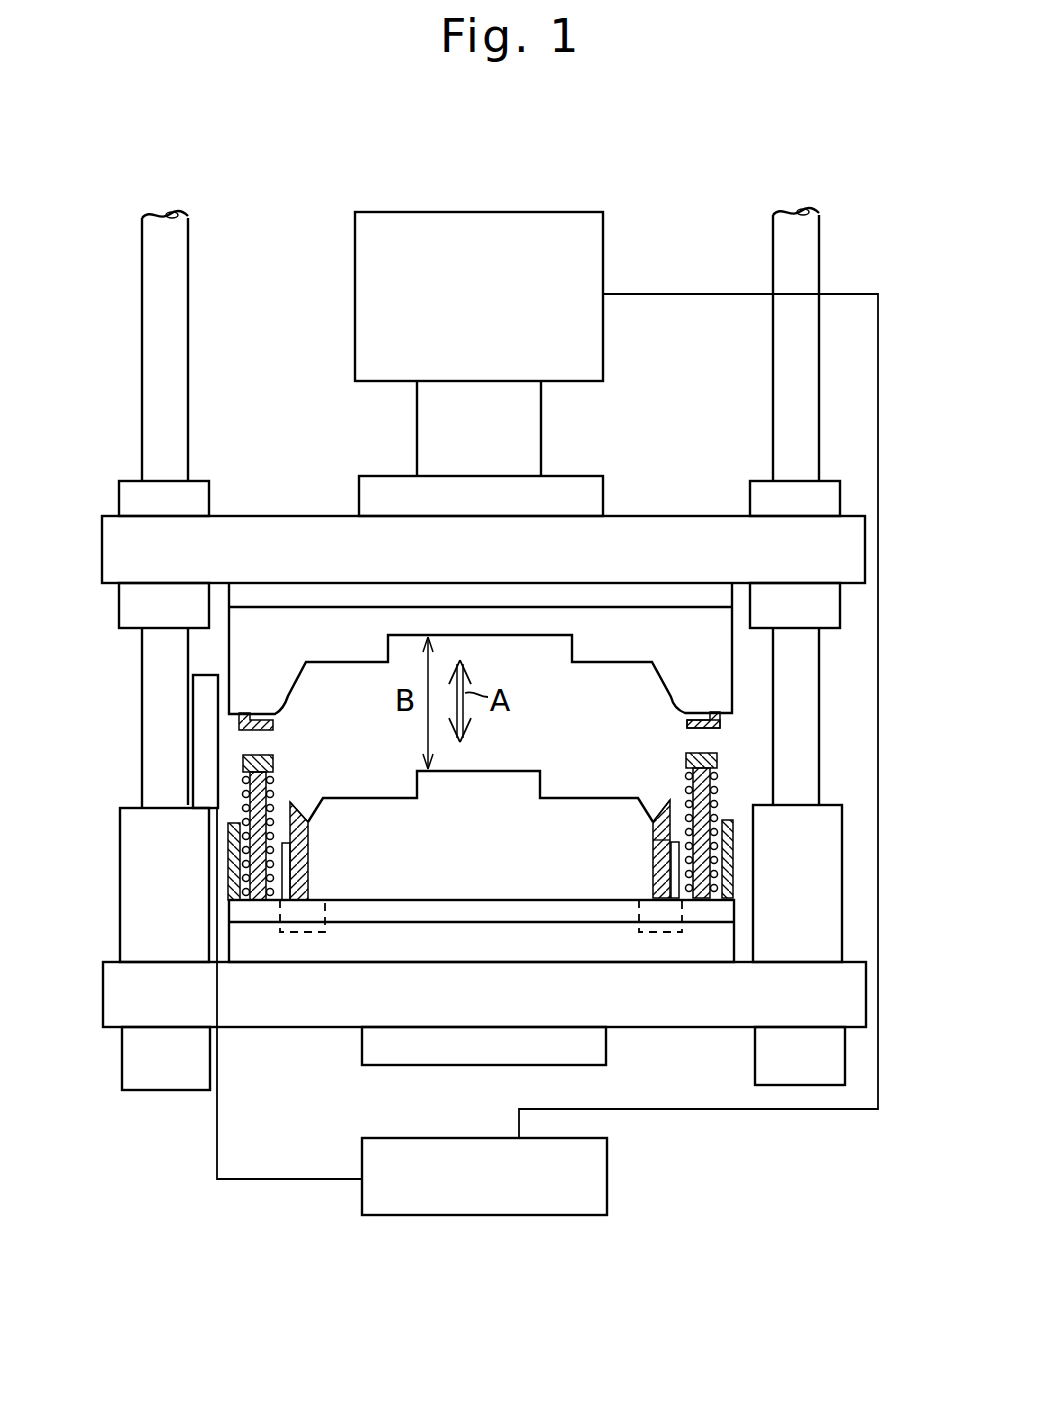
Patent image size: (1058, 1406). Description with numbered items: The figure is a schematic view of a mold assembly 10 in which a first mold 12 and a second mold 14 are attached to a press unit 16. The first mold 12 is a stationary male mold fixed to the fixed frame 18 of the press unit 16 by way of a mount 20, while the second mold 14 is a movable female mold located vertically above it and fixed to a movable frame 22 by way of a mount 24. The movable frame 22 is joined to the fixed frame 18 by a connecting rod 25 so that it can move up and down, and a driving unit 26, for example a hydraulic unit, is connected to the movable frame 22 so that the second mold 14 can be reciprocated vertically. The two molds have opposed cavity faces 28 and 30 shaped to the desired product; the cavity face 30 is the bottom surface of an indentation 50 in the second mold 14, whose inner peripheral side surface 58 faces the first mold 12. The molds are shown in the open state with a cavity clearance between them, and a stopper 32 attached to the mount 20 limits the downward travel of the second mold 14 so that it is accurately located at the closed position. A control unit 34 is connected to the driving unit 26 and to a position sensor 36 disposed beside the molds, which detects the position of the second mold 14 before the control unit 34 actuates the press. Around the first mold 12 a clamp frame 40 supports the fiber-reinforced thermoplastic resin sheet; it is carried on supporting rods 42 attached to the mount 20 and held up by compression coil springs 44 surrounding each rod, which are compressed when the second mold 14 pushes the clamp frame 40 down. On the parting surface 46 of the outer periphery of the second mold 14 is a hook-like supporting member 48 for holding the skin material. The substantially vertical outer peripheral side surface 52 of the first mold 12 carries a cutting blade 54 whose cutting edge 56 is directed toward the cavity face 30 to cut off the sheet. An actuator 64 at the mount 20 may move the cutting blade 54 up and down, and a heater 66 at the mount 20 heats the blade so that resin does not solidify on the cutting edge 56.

The mold assembly 10 is at (797, 192).
The first mold 12 is at (560, 802).
The second mold 14 is at (650, 640).
The press unit 16 is at (168, 192).
The fixed frame 18 is at (125, 995).
The mount 20 is at (495, 925).
The movable frame 22 is at (265, 530).
The mount 24 is at (465, 596).
The connecting rod 25 is at (790, 252).
The driving unit 26 is at (370, 322).
The cavity face 28 is at (365, 798).
The cavity face 30 is at (612, 668).
The stopper 32 is at (232, 895).
The control unit 34 is at (470, 1206).
The position sensor 36 is at (193, 774).
The clamp frame 40 is at (714, 758).
The supporting rod 42 is at (236, 840).
The compression coil spring 44 is at (245, 795).
The parting surface 46 is at (686, 714).
The supporting member 48 is at (692, 730).
The indentation 50 is at (294, 680).
The outer peripheral side surface 52 is at (664, 848).
The cutting blade 54 is at (310, 850).
The cutting edge 56 is at (293, 800).
The inner peripheral side surface 58 is at (674, 692).
The actuator 64 is at (332, 930).
The heater 66 is at (318, 895).